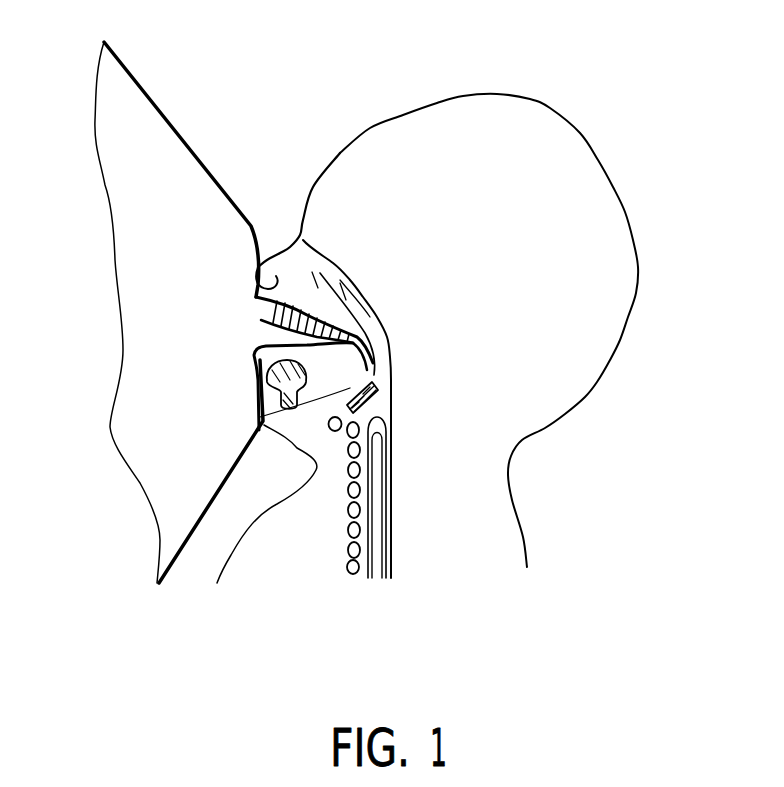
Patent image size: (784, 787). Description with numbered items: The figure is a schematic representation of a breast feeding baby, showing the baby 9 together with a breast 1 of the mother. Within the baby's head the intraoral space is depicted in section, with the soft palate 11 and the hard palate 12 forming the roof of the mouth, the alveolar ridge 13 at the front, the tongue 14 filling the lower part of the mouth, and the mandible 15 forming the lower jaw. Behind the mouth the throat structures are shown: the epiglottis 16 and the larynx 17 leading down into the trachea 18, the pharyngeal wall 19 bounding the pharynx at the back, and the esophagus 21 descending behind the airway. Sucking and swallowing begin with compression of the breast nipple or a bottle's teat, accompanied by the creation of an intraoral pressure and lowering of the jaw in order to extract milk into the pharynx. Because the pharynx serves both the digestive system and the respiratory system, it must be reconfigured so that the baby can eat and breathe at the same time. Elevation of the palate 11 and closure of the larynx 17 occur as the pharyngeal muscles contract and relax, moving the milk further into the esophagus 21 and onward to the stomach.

The breast 1 is at (122, 98).
The baby 9 is at (628, 208).
The soft palate 11 is at (360, 333).
The hard palate 12 is at (323, 310).
The alveolar ridge 13 is at (273, 287).
The tongue 14 is at (313, 363).
The mandible 15 is at (280, 385).
The epiglottis 16 is at (350, 405).
The larynx 17 is at (328, 432).
The trachea 18 is at (347, 473).
The pharyngeal wall 19 is at (391, 390).
The esophagus 21 is at (391, 483).